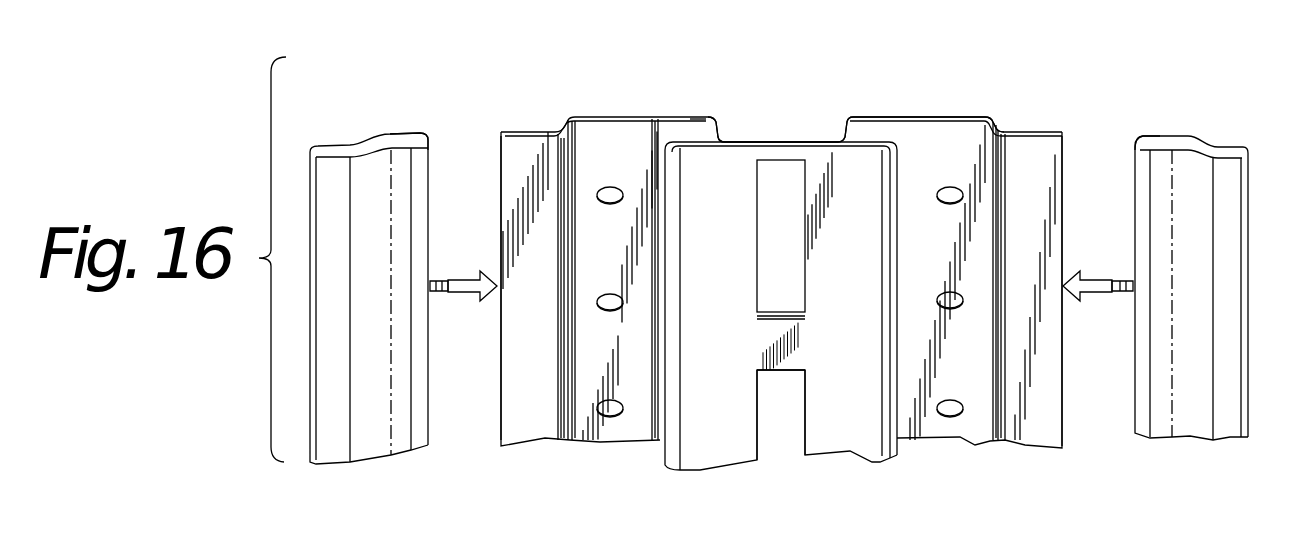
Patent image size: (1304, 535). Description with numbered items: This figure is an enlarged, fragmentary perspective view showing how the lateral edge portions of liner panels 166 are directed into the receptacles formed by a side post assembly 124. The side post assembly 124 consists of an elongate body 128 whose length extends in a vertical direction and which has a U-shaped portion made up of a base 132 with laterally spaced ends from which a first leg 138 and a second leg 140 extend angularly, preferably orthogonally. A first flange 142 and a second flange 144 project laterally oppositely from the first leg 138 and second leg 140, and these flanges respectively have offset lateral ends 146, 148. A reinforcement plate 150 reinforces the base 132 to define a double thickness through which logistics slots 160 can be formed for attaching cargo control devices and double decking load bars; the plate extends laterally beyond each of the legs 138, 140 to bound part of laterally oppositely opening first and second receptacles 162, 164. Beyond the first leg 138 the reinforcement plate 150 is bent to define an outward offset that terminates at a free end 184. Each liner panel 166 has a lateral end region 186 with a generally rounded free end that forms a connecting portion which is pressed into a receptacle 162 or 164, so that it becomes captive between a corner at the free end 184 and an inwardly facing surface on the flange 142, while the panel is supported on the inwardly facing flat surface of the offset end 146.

The side post assembly 124 is at (853, 468).
The elongate body 128 is at (753, 140).
The base 132 is at (795, 140).
The first leg 138 is at (863, 140).
The second leg 140 is at (705, 132).
The first flange 142 is at (970, 126).
The second flange 144 is at (597, 133).
The offset lateral end 146 is at (1030, 146).
The offset lateral end 148 is at (513, 140).
The reinforcement plate 150 is at (723, 158).
The logistics slot 160 is at (757, 272).
The first receptacle 162 is at (892, 140).
The second receptacle 164 is at (716, 133).
The liner panel 166 is at (355, 146).
The free end 184 is at (937, 138).
The lateral end region 186 is at (432, 148).